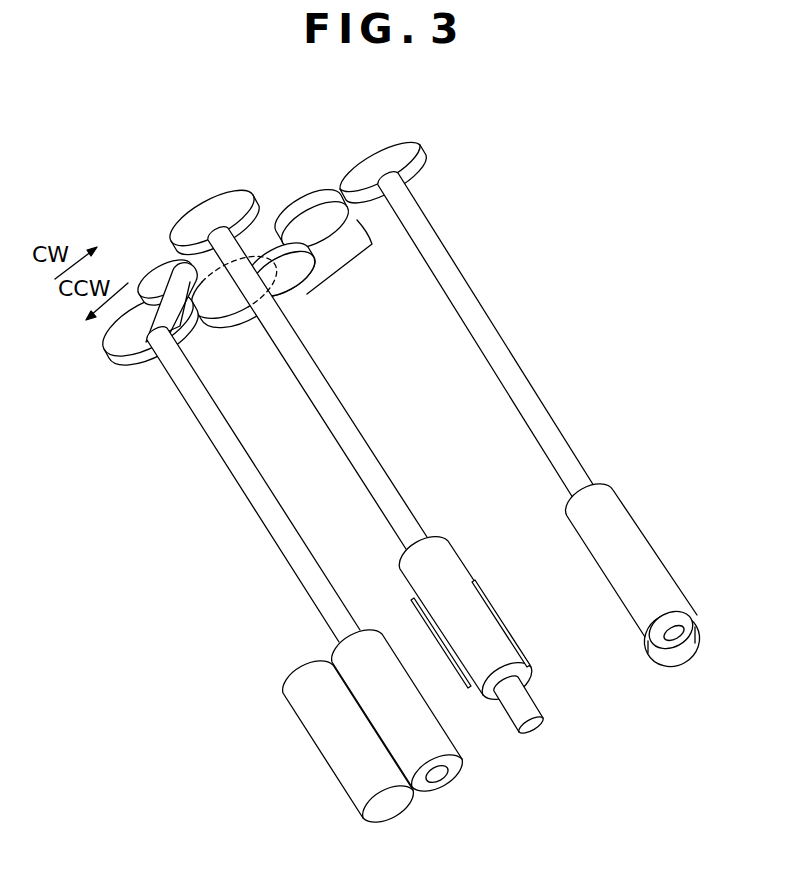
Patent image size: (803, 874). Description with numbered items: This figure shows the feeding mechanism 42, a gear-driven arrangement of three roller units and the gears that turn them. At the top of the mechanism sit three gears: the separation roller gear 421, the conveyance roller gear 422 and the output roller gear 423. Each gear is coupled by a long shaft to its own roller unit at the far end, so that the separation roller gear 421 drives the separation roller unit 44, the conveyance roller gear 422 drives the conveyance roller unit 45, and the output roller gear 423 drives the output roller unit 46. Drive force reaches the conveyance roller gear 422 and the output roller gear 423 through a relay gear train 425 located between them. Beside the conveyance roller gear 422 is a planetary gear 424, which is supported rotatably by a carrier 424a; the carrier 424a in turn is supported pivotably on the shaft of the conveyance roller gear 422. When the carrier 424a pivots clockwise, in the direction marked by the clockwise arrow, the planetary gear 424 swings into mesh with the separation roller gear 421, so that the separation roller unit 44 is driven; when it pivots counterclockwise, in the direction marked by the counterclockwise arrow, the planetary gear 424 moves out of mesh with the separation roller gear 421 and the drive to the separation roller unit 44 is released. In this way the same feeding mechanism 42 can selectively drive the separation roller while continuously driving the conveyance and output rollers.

The feeding mechanism 42 is at (168, 612).
The separation roller gear 421 is at (221, 200).
The conveyance roller gear 422 is at (116, 350).
The output roller gear 423 is at (398, 148).
The planetary gear 424 is at (132, 272).
The carrier 424a is at (166, 298).
The relay gear train 425 is at (312, 294).
The separation roller unit 44 is at (456, 556).
The conveyance roller unit 45 is at (452, 743).
The output roller unit 46 is at (680, 582).